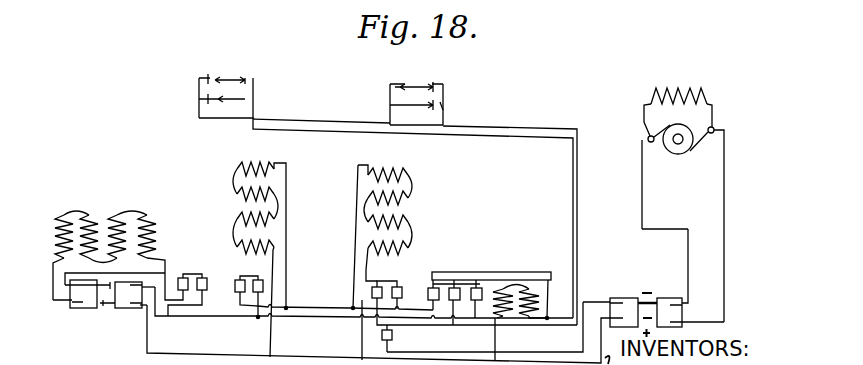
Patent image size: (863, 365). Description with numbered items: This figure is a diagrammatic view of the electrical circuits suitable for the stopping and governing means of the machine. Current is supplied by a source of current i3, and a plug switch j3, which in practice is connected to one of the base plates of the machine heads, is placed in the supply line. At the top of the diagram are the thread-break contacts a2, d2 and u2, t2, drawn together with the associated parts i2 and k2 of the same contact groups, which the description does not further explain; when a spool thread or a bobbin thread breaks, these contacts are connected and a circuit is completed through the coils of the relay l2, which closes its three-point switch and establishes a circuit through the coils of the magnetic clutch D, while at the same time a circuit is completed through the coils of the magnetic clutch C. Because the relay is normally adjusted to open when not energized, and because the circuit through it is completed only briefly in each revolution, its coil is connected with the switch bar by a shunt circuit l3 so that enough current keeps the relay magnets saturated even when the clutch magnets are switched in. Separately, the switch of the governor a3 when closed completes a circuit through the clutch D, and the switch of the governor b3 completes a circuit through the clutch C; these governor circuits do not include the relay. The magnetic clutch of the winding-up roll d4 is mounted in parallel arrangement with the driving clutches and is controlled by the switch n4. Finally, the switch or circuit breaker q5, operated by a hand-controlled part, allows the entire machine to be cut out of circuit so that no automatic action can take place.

The contact d2 is at (205, 78).
The contact a2 is at (219, 80).
The relay terminal i2 is at (241, 82).
The relay contact arm k2 is at (226, 86).
The contact u2 is at (405, 104).
The contact t2 is at (443, 106).
The magnetic clutch of the winding-up roll d4 is at (98, 216).
The magnetic clutch C is at (243, 235).
The magnetic clutch D is at (398, 223).
The switch n4 is at (192, 268).
The governor a3 is at (241, 271).
The governor b3 is at (405, 268).
The relay l2 is at (489, 272).
The shunt circuit l3 is at (548, 298).
The switch q5 is at (392, 335).
The plug switch j3 is at (661, 295).
The source of current i3 is at (672, 154).